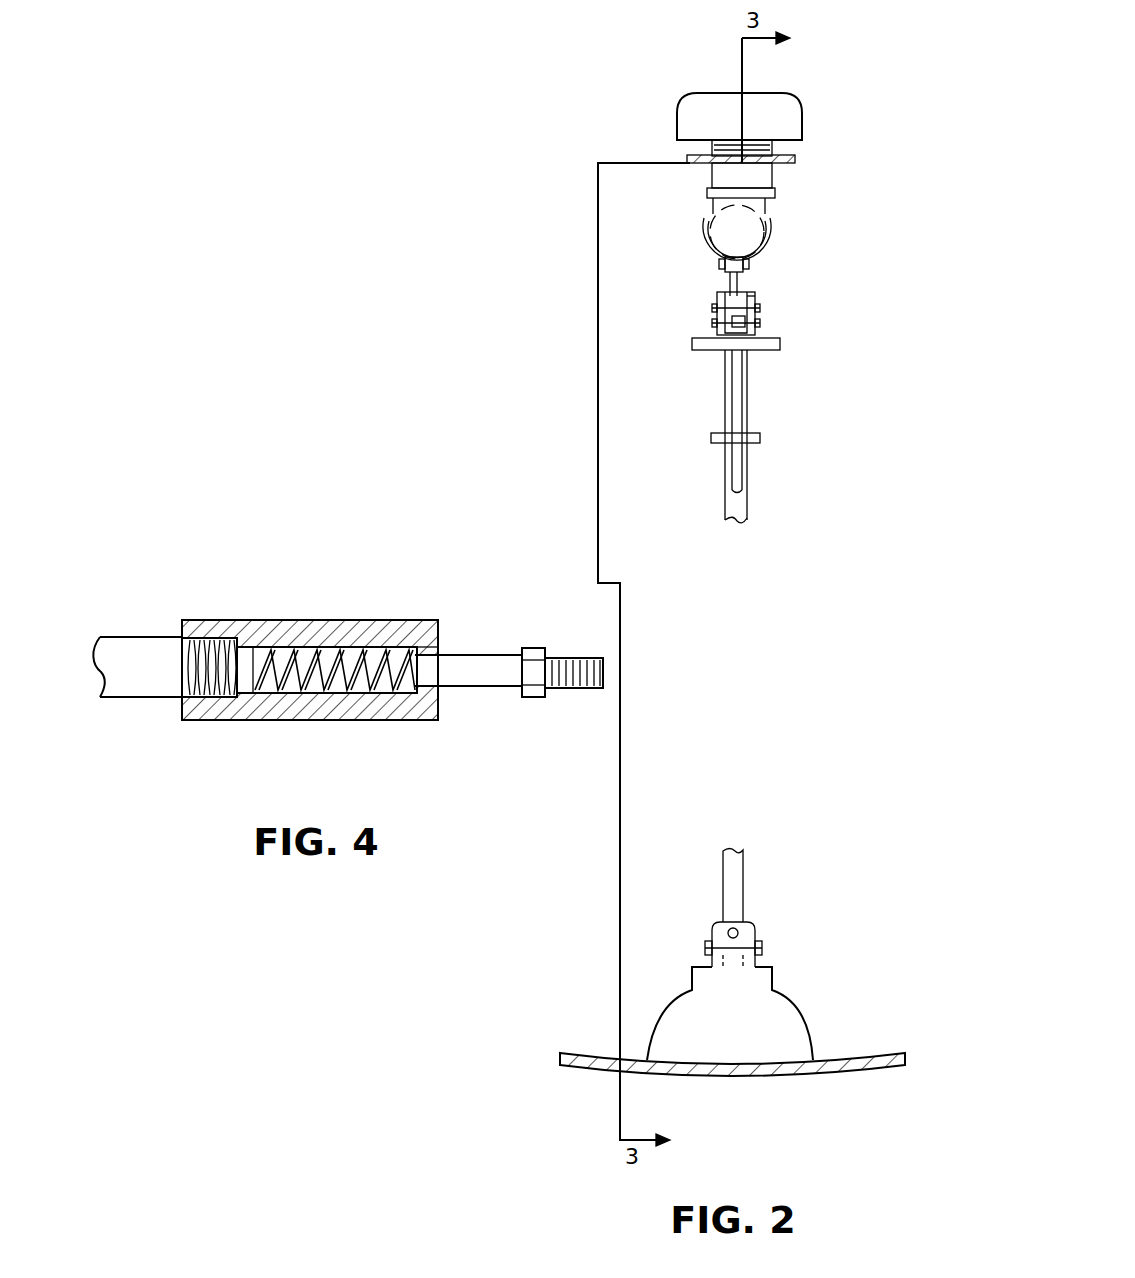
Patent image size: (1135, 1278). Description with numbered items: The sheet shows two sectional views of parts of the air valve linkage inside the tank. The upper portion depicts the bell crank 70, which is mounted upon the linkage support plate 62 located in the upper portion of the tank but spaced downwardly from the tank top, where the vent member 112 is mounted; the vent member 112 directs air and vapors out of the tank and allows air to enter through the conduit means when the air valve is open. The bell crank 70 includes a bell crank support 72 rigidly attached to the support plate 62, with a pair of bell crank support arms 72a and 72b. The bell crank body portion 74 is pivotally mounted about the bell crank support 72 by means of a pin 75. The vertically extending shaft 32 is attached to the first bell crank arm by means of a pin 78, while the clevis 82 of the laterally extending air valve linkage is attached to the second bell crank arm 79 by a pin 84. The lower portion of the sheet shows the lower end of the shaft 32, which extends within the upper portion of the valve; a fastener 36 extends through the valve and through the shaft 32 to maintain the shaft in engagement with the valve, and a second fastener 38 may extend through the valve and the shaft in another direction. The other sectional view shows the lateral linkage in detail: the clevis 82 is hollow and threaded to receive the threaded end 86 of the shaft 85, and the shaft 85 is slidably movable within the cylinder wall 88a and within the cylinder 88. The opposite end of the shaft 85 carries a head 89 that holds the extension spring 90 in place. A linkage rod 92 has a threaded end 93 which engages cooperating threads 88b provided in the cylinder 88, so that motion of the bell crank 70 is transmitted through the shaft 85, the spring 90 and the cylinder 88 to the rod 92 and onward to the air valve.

In FIG. 2, the vent member 112 is at (763, 110).
In FIG. 2, the bell crank 70 is at (856, 300).
In FIG. 2, the clevis 82 is at (748, 262).
In FIG. 2, the pin 84 is at (718, 263).
In FIG. 2, the second bell crank arm 79 is at (738, 283).
In FIG. 2, the bell crank body portion 74 is at (740, 300).
In FIG. 2, the pin 75 is at (712, 307).
In FIG. 2, the bell crank support arm 72b is at (758, 321).
In FIG. 2, the bell crank support arm 72a is at (716, 320).
In FIG. 2, the pin 78 is at (716, 327).
In FIG. 2, the bell crank support 72 is at (780, 338).
In FIG. 2, the linkage support plate 62 is at (700, 345).
In FIG. 2, the shaft 32 is at (740, 875).
In FIG. 2, the fastener 36 is at (740, 933).
In FIG. 2, the second fastener 38 is at (762, 950).
In FIG. 4, the linkage rod 92 is at (133, 692).
In FIG. 4, the cylinder 88 is at (375, 705).
In FIG. 4, the cooperating threads 88b is at (233, 640).
In FIG. 4, the cylinder wall 88a is at (438, 696).
In FIG. 4, the threaded end 93 is at (182, 638).
In FIG. 4, the head 89 is at (247, 687).
In FIG. 4, the extension spring 90 is at (325, 648).
In FIG. 4, the shaft 85 is at (493, 662).
In FIG. 4, the threaded end 86 is at (567, 658).